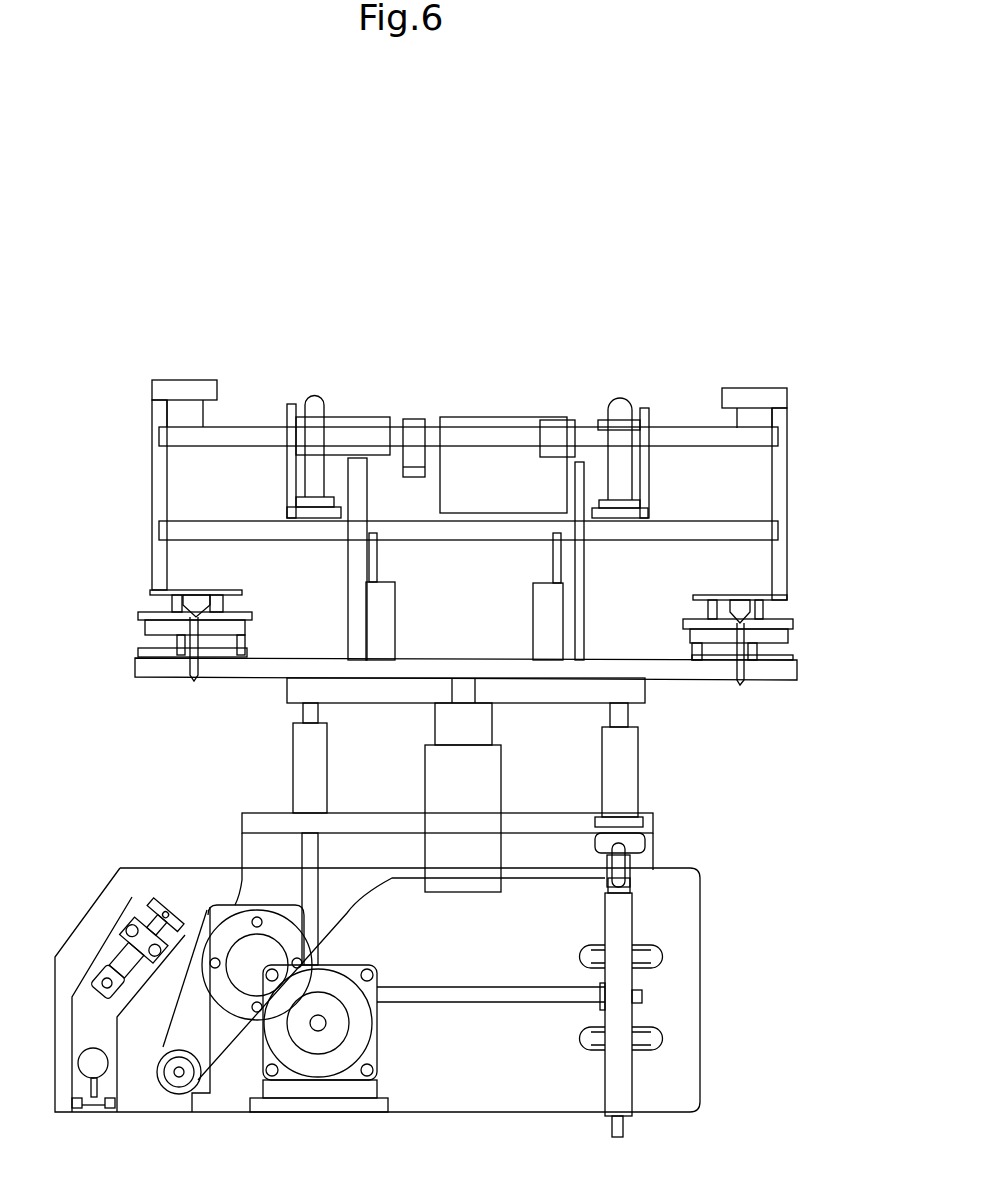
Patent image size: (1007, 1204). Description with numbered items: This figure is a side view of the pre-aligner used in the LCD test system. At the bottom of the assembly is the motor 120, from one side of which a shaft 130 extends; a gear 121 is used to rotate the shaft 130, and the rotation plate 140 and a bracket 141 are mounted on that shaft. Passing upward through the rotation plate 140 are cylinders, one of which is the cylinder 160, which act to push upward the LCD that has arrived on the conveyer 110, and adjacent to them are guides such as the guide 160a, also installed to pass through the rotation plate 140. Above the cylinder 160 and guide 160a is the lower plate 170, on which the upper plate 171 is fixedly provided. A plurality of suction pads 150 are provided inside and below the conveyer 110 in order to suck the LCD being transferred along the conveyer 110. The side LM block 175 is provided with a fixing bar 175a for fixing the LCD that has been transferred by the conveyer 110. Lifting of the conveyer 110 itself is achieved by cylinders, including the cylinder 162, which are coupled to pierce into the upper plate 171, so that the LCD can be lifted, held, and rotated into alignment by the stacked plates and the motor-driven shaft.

The conveyer 110 is at (185, 380).
The suction pads 150 is at (357, 460).
The fixing bar 175a is at (785, 463).
The cylinder 162 is at (383, 605).
The LM block 175 is at (788, 623).
The upper plate 171 is at (783, 670).
The lower plate 170 is at (630, 692).
The cylinder 160 is at (448, 775).
The guide 160a is at (627, 782).
The rotation plate 140 is at (252, 852).
The gear 121 is at (213, 912).
The shaft 130 is at (250, 985).
The motor 120 is at (373, 1053).
The bracket 141 is at (370, 1103).